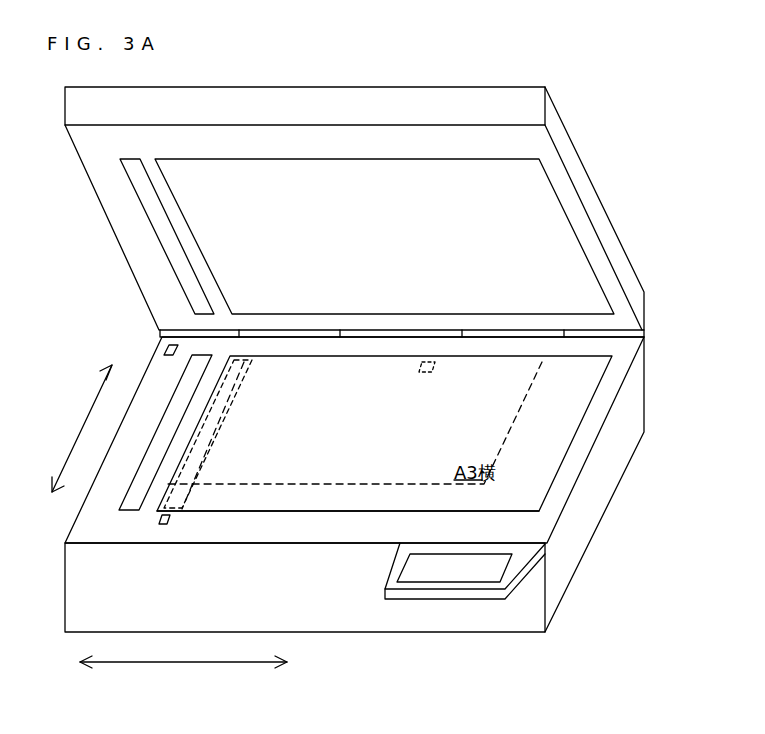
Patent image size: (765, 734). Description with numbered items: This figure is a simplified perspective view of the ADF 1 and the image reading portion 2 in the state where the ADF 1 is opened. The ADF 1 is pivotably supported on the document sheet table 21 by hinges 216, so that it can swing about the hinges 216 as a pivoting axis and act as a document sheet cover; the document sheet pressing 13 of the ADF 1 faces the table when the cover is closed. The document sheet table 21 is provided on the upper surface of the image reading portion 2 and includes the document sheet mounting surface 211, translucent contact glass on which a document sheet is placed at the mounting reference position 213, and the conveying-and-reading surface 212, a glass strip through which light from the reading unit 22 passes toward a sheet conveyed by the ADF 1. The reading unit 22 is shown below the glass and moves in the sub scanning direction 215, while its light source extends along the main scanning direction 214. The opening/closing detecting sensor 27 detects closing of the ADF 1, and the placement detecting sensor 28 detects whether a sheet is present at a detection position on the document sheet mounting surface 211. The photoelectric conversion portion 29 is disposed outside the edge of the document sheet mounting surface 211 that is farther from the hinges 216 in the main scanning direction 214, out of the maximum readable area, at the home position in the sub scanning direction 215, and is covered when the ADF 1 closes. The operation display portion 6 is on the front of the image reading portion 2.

The ADF 1 is at (105, 242).
The document sheet pressing 13 is at (128, 157).
The hinges 216 is at (293, 328).
The image reading portion 2 is at (600, 533).
The document sheet table 21 is at (235, 542).
The document sheet mounting surface 211 is at (312, 510).
The conveying-and-reading surface 212 is at (122, 509).
The mounting reference position 213 is at (235, 362).
The reading unit 22 is at (212, 435).
The placement detecting sensor 28 is at (420, 371).
The opening/closing detecting sensor 27 is at (167, 355).
The photoelectric conversion portion 29 is at (163, 523).
The operation display portion 6 is at (395, 566).
The main scanning direction 214 is at (84, 418).
The sub scanning direction 215 is at (177, 661).